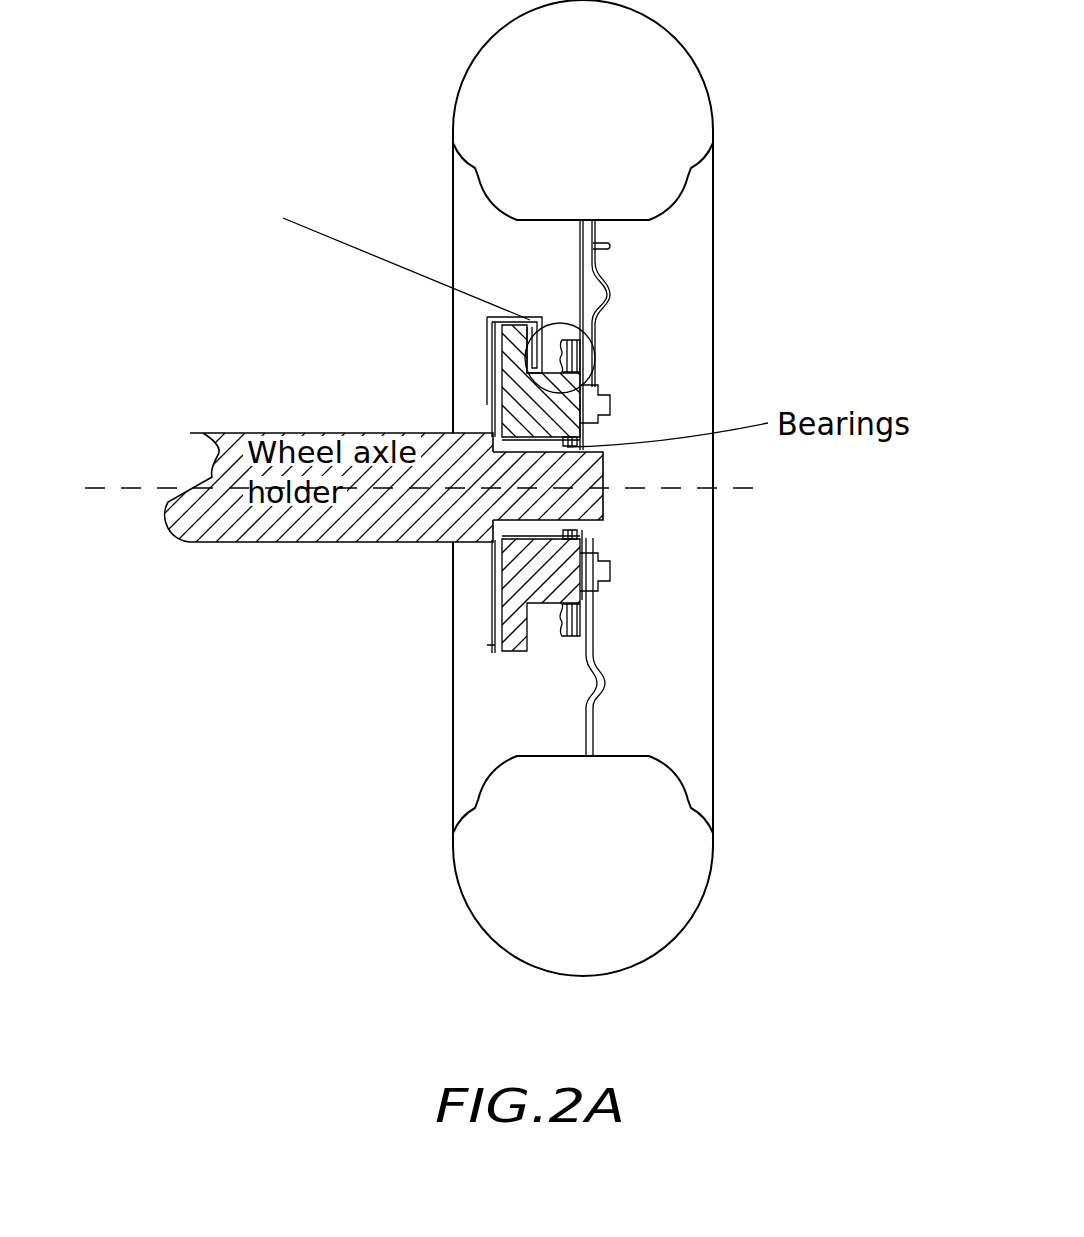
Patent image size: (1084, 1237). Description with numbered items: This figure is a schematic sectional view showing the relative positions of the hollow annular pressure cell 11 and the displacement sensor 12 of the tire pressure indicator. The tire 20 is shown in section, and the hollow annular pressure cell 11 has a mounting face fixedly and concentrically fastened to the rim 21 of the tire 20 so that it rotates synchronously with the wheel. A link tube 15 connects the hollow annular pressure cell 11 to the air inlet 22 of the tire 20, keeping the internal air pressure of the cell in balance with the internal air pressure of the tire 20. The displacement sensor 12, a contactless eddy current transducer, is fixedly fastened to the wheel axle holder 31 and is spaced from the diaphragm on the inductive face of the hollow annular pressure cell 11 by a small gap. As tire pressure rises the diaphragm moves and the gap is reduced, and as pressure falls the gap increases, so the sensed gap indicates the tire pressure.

The tire 20 is at (705, 75).
The rim 21 is at (660, 212).
The link tube 15 is at (579, 250).
The air inlet 22 is at (610, 247).
The displacement sensor 12 is at (545, 360).
The hollow annular pressure cell 11 is at (573, 358).
The wheel axle holder 31 is at (603, 485).